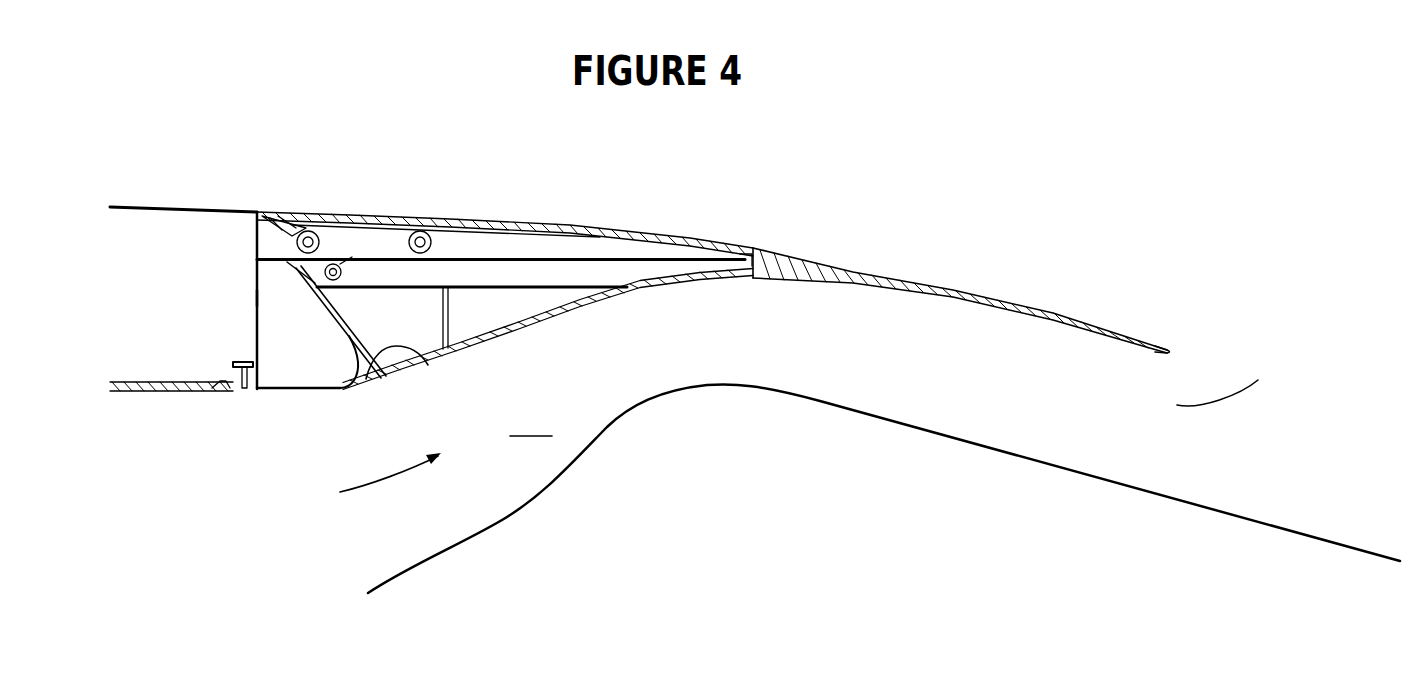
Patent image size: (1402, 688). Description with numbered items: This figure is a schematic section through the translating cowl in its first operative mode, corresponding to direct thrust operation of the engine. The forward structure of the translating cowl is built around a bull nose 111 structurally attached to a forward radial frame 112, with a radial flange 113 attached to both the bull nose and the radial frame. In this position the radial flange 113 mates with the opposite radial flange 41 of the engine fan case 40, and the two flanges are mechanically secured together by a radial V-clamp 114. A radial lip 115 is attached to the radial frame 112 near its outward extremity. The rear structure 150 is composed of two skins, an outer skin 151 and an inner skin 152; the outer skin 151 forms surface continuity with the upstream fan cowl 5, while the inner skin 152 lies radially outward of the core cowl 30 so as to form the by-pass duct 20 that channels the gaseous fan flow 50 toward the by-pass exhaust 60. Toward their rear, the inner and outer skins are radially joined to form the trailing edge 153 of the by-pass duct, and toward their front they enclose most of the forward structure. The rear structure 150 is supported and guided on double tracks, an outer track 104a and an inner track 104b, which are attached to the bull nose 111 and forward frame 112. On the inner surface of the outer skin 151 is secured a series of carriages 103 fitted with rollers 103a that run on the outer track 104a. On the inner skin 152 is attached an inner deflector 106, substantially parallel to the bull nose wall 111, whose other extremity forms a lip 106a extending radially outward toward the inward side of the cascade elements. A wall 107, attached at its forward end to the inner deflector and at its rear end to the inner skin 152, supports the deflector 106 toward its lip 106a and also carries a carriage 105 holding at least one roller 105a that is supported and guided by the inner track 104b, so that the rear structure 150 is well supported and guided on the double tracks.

The upstream fan cowl 5 is at (135, 208).
The radial lip 115 is at (247, 218).
The rear structure 150 is at (510, 182).
The rollers 103a is at (322, 212).
The carriages 103 is at (345, 224).
The roller 105a is at (352, 257).
The carriage 105 is at (348, 275).
The outer track 104a is at (573, 255).
The inner track 104b is at (647, 263).
The lip of inner deflector 106a is at (298, 275).
The forward radial frame 112 is at (257, 298).
The bull nose 111 is at (343, 333).
The inner deflector 106 is at (423, 363).
The wall 107 is at (512, 288).
The outer skin 151 is at (657, 230).
The inner skin 152 is at (712, 282).
The trailing edge 153 is at (1173, 347).
The engine fan case 40 is at (139, 391).
The radial flange of fan case 41 is at (230, 392).
The radial V-clamp 114 is at (240, 367).
The radial flange 113 is at (252, 393).
The by-pass duct 20 is at (531, 422).
The gaseous fan flow 50 is at (390, 472).
The core cowl 30 is at (907, 425).
The by-pass exhaust 60 is at (1233, 377).